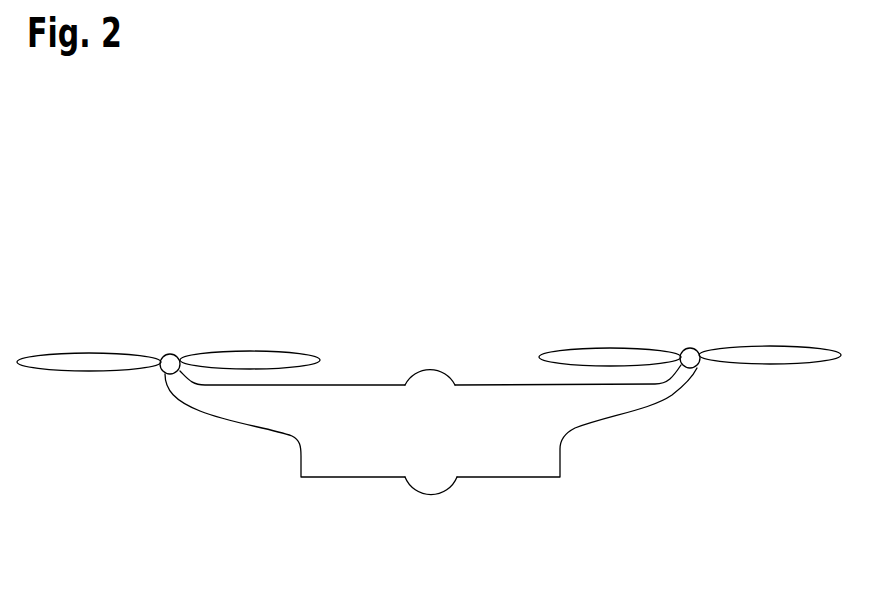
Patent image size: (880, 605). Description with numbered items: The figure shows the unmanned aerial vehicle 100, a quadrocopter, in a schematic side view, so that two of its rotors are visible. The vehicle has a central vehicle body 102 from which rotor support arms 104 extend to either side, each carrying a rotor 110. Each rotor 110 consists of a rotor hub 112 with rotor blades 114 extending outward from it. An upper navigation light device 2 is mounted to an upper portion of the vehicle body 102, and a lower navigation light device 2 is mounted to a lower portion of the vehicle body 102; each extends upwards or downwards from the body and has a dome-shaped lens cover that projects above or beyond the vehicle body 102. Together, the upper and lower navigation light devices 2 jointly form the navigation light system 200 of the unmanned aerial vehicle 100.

The unmanned aerial vehicle 100 is at (675, 176).
The vehicle body 102 is at (333, 463).
The rotor support arm 104 is at (200, 401).
The rotor 110 is at (145, 319).
The rotor hub 112 is at (170, 354).
The rotor blade 114 is at (69, 358).
The navigation light device 2 is at (430, 380).
The navigation light system 200 is at (469, 499).